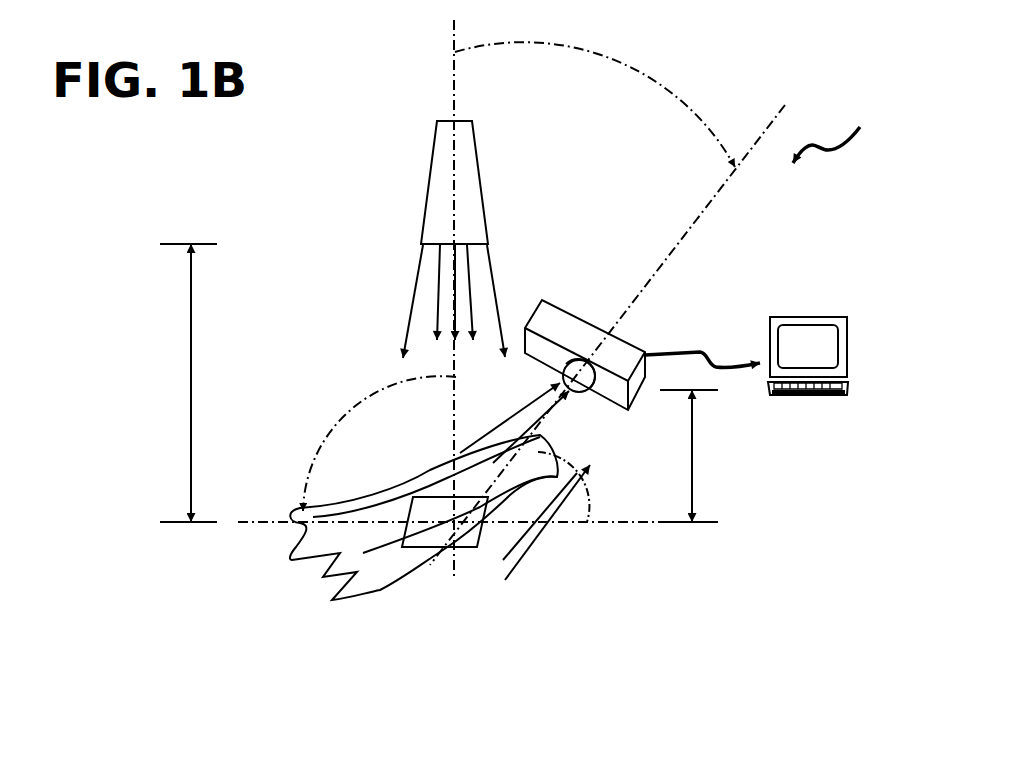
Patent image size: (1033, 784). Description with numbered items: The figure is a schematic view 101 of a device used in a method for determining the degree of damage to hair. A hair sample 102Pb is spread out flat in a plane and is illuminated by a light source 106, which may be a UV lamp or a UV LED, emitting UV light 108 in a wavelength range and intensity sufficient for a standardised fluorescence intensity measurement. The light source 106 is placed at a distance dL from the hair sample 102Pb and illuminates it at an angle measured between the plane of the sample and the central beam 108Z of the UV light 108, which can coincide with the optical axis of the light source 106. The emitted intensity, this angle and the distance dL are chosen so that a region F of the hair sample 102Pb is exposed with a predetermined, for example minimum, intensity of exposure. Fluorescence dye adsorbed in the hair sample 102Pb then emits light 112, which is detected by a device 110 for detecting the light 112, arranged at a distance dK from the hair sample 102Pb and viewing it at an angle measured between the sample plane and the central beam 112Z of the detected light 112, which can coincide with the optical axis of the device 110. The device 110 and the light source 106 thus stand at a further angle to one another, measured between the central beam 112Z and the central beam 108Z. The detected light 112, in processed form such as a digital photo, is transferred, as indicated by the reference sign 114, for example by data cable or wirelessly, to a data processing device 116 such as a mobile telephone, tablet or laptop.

The view 101 is at (837, 123).
The hair sample 102Pb is at (380, 590).
The light source 106 is at (442, 153).
The UV light 108 is at (473, 293).
The central beam of the UV light 108Z is at (453, 75).
The device for detecting the light 110 is at (617, 357).
The light emitted by fluorescence dye 112 is at (563, 405).
The central beam of the detected light 112Z is at (677, 247).
The transfer of detected light data 114 is at (710, 350).
The data processing device 116 is at (803, 395).
The region of the hair sample F is at (490, 533).
The distance of the light source from the hair sample dL is at (180, 383).
The distance of the detecting device from the hair sample dK is at (705, 456).